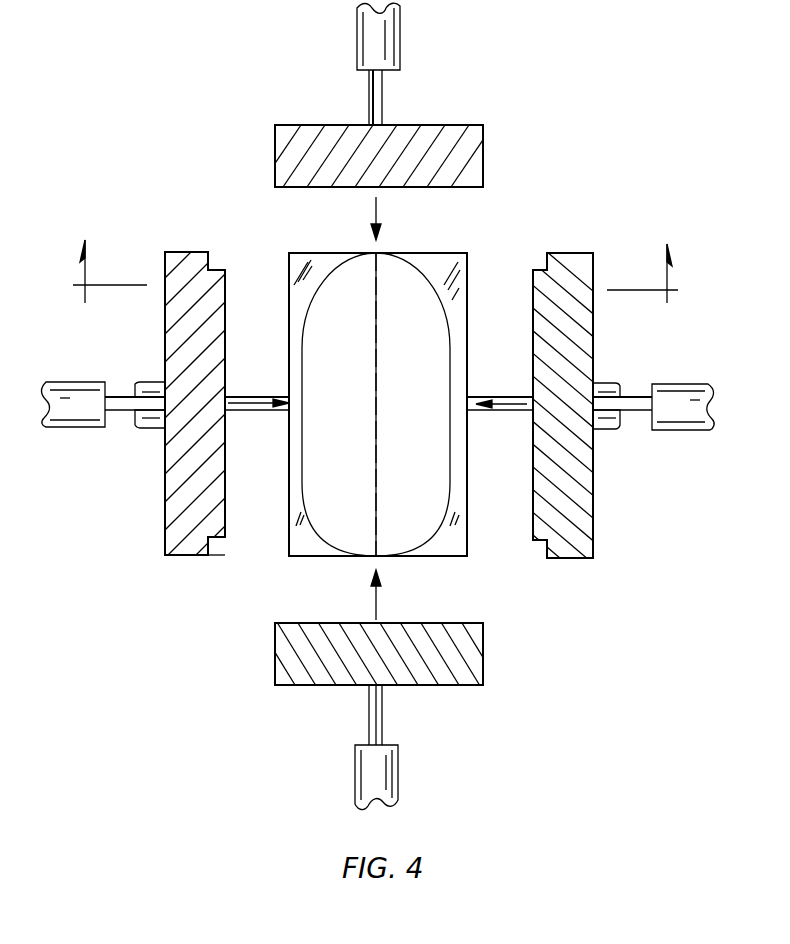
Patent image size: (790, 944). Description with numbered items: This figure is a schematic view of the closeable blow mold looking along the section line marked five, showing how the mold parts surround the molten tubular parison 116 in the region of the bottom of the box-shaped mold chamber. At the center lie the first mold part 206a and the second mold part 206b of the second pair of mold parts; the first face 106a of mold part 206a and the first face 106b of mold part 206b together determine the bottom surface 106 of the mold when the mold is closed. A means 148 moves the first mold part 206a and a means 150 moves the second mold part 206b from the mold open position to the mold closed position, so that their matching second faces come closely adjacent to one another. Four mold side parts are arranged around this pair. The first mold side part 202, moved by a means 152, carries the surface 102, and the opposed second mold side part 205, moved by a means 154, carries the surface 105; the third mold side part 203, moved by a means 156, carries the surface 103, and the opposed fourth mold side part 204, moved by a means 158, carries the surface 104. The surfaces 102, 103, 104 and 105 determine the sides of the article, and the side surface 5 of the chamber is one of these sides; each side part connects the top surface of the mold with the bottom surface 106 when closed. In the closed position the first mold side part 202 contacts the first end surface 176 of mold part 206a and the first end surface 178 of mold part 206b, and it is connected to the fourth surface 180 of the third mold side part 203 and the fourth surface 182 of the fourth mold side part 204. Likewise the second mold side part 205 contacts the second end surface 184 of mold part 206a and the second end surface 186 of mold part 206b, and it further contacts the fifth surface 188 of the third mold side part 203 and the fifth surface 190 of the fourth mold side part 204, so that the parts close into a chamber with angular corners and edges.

The side surface 5 is at (375, 257).
The surface of first mold side part 102 is at (425, 188).
The surface of third mold side part 103 is at (533, 485).
The surface of fourth mold side part 104 is at (228, 380).
The surface of second mold side part 105 is at (345, 622).
The bottom surface of the mold 106 is at (332, 549).
The first face of first mold part 106a is at (335, 404).
The first face of second mold part 106b is at (418, 404).
The molten tubular parison 116 is at (301, 490).
The means for moving first mold part of second pair 148 is at (147, 380).
The means for moving second mold part of second pair 150 is at (615, 382).
The means for moving first mold side part 152 is at (402, 56).
The means for moving second mold side part 154 is at (401, 760).
The means for moving third mold side part 156 is at (662, 383).
The means for moving fourth mold side part 158 is at (97, 426).
The first end surface of first mold part 176 is at (323, 249).
The first end surface of second mold part 178 is at (440, 252).
The fourth surface of third mold side part 180 is at (545, 265).
The fourth surface of fourth mold side part 182 is at (212, 255).
The second end surface of first mold part 184 is at (318, 558).
The second end surface of second mold part 186 is at (422, 558).
The fifth surface of third mold side part 188 is at (537, 545).
The fifth surface of fourth mold side part 190 is at (218, 558).
The first mold side part 202 is at (445, 124).
The third mold side part 203 is at (595, 477).
The fourth mold side part 204 is at (162, 458).
The second mold side part 205 is at (322, 688).
The first mold part of second pair 206a is at (280, 315).
The second mold part of second pair 206b is at (473, 340).